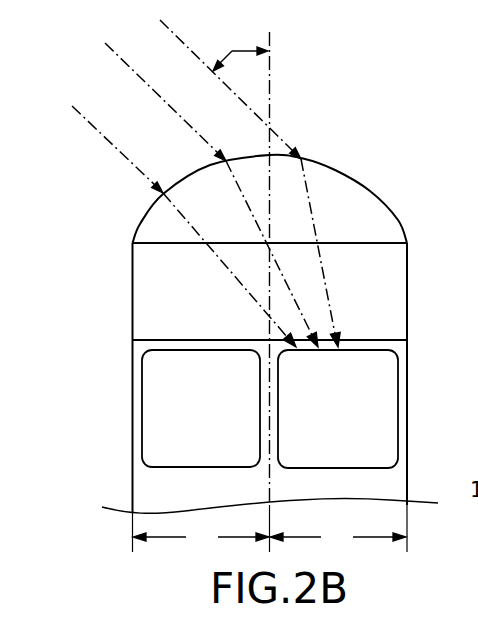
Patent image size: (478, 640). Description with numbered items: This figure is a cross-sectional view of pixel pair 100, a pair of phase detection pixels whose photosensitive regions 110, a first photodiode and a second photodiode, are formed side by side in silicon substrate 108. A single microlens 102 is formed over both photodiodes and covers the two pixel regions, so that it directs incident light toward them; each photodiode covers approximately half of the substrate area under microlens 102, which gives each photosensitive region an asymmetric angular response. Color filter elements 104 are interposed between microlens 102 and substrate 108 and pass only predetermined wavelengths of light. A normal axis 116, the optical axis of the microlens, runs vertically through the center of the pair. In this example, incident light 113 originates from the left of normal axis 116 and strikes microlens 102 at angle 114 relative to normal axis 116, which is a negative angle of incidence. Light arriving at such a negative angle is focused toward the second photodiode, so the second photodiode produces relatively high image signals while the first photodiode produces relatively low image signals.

The pixel pair 100 is at (381, 106).
The microlens 102 is at (335, 183).
The color filter elements 104 is at (147, 282).
The silicon substrate 108 is at (145, 487).
The photosensitive regions 110 is at (158, 398).
The incident light 113 is at (133, 163).
The angle 114 is at (231, 50).
The normal axis 116 is at (270, 64).